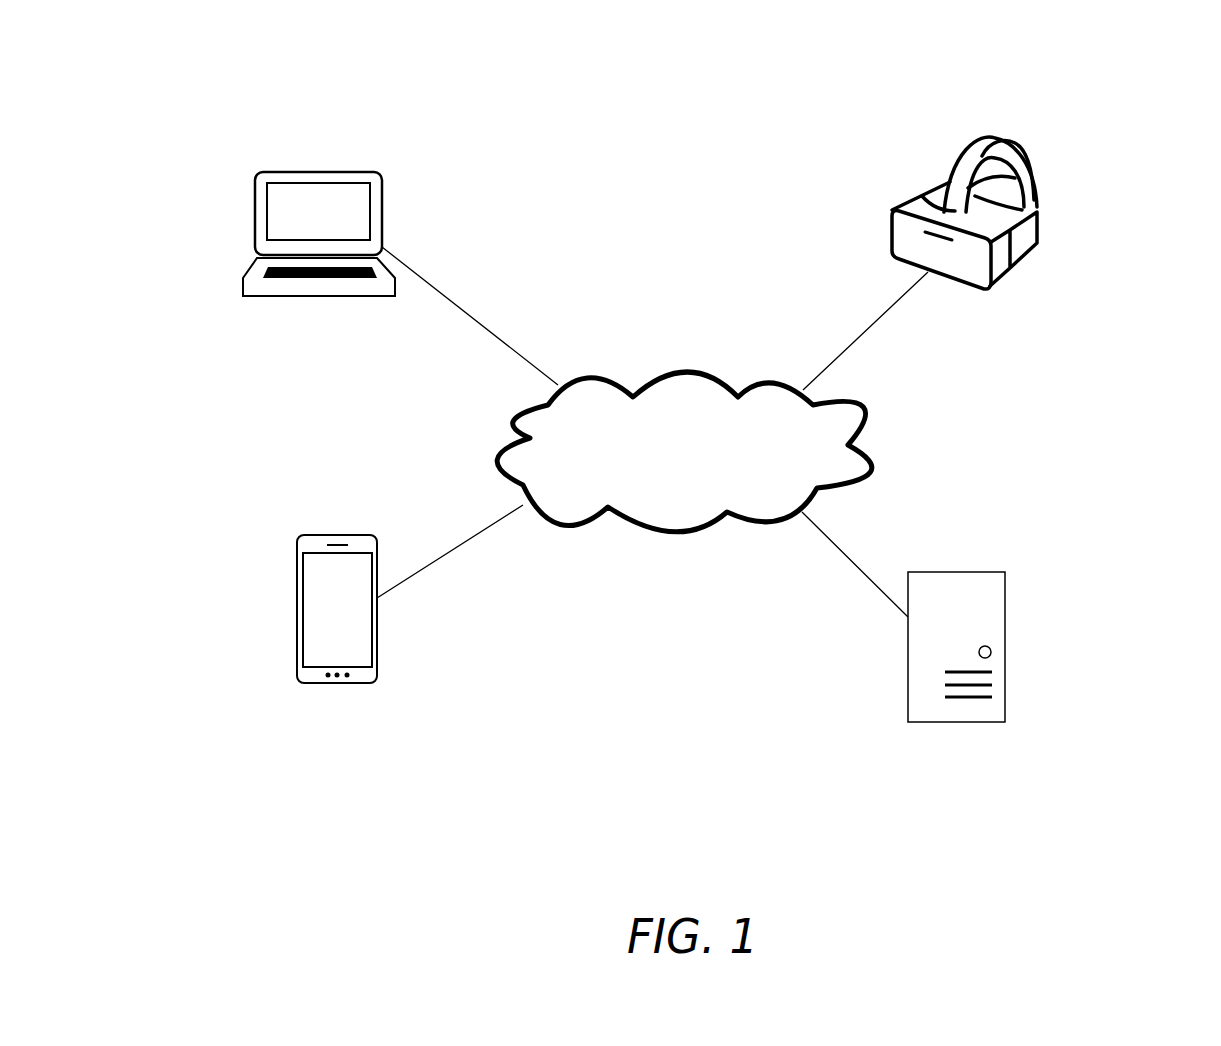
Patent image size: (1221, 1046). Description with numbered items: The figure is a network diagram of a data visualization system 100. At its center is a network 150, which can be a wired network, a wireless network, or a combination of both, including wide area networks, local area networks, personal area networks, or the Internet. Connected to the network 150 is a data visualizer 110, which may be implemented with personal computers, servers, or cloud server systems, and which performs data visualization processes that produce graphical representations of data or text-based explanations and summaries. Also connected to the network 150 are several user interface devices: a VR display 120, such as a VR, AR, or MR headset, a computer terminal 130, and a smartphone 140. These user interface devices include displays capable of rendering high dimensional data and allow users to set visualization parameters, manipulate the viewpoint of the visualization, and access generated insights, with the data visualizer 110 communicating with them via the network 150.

The data visualization system 100 is at (627, 131).
The data visualizer 110 is at (1002, 647).
The VR display 120 is at (1038, 220).
The computer terminal 130 is at (257, 190).
The smartphone 140 is at (297, 617).
The network 150 is at (682, 373).